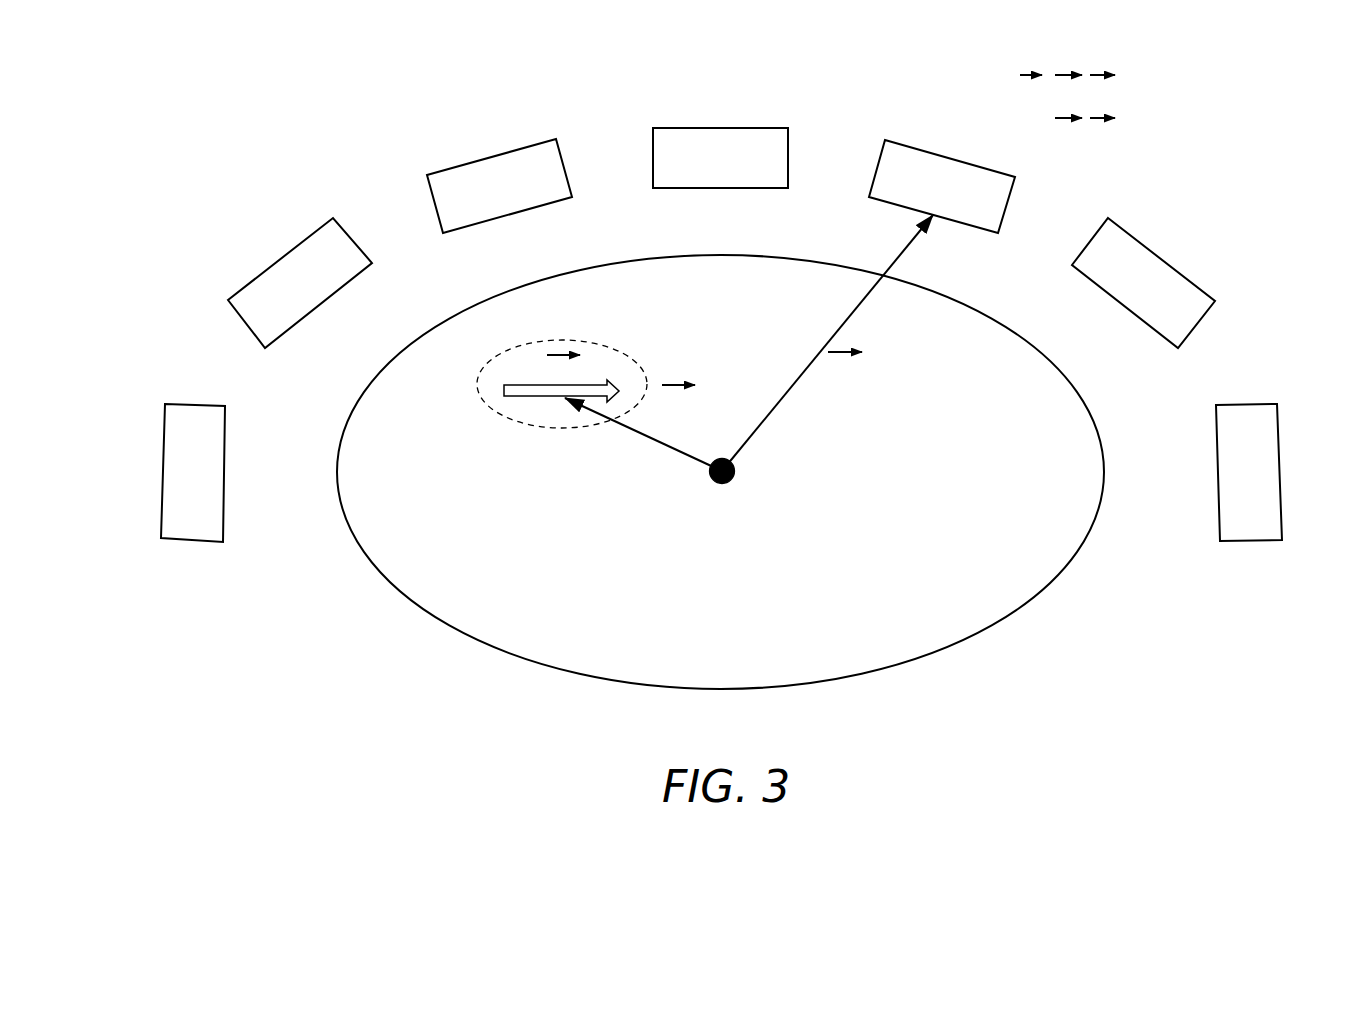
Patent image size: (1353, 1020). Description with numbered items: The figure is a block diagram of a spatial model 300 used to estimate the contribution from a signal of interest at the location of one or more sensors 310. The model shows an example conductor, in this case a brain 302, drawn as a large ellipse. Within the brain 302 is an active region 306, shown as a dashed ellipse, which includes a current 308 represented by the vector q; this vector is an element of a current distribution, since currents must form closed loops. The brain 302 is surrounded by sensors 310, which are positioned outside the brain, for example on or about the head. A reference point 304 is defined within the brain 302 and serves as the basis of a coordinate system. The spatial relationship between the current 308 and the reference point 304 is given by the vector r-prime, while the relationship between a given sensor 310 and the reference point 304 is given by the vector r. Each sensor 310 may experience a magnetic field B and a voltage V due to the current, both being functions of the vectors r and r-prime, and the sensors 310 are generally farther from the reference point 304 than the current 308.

The spatial model 300 is at (216, 136).
The brain 302 is at (722, 254).
The reference point 304 is at (720, 483).
The active region 306 is at (558, 342).
The current 308 is at (517, 398).
The sensors 310 is at (197, 403).